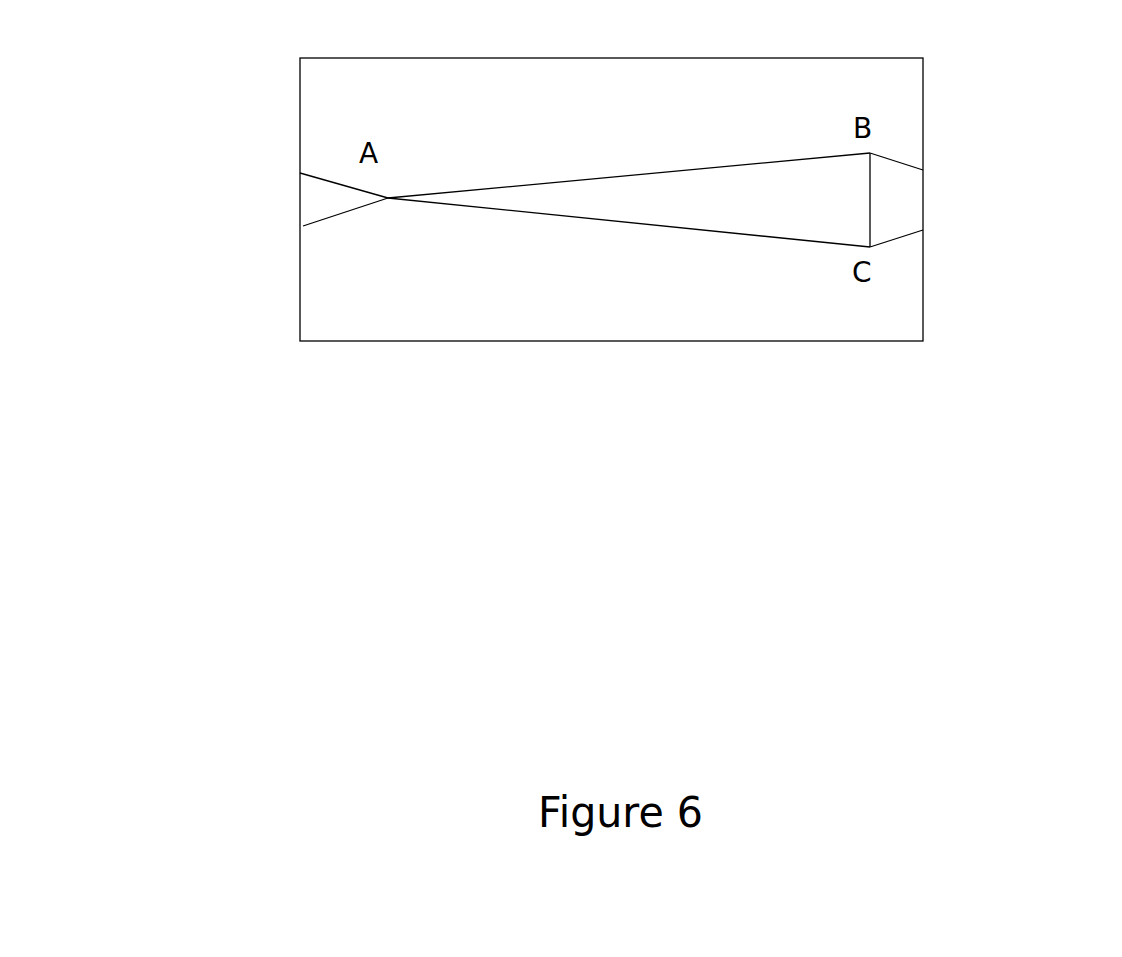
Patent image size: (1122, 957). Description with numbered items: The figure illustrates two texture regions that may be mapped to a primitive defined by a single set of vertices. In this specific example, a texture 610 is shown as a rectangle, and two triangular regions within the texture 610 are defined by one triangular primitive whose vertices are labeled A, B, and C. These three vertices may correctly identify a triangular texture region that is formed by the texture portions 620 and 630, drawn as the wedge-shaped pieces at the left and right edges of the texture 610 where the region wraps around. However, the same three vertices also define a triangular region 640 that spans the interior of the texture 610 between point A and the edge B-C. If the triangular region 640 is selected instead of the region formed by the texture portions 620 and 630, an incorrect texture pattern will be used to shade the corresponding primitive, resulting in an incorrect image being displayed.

The texture 610 is at (398, 93).
The texture portion 620 is at (306, 199).
The texture portion 630 is at (909, 200).
The triangular region 640 is at (680, 200).